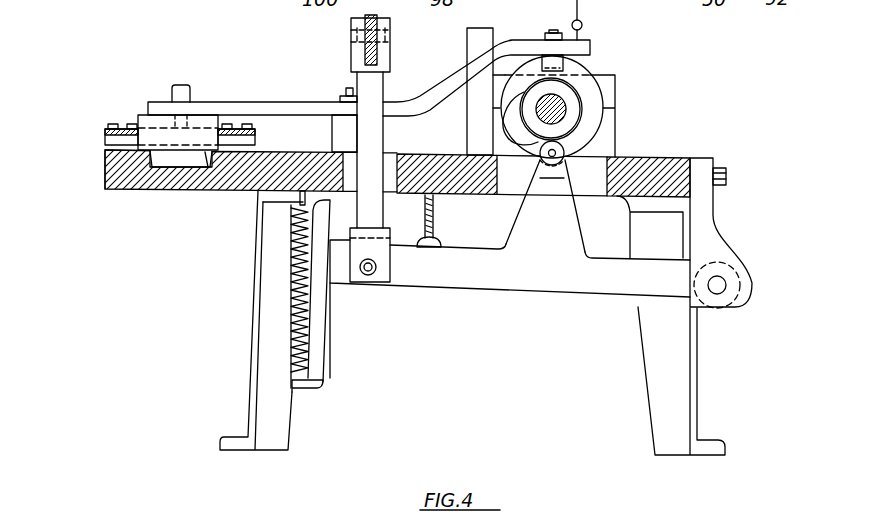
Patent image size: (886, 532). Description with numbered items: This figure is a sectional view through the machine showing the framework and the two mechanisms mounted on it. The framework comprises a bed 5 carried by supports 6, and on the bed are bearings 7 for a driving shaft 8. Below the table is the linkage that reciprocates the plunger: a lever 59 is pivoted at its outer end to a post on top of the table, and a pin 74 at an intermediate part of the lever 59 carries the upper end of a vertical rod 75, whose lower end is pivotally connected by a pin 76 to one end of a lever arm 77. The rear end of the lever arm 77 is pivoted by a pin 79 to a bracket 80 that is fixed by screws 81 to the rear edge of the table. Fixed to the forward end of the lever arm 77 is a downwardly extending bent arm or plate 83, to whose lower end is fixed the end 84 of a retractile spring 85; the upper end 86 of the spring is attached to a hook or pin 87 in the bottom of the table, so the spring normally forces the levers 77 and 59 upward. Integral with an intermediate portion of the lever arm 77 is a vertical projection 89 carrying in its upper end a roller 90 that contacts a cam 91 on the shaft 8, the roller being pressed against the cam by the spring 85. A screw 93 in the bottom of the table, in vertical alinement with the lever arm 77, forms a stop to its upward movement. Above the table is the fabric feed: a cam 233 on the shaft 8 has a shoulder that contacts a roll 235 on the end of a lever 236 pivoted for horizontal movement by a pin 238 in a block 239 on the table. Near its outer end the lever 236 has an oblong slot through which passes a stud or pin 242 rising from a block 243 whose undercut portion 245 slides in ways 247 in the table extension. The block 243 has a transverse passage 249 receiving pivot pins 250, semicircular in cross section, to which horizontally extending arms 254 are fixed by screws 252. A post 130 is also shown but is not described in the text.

The bed 5 is at (672, 165).
The supports 6 is at (270, 343).
The bearings 7 is at (607, 83).
The driving shaft 8 is at (563, 108).
The lever 59 is at (376, 52).
The pin 74 is at (385, 35).
The vertical rod 75 is at (373, 138).
The pin 76 is at (370, 268).
The lever arm 77 is at (462, 282).
The pin 79 is at (720, 288).
The bracket 80 is at (712, 238).
The screws 81 is at (726, 177).
The bent arm or plate 83 is at (327, 345).
The end of retractile spring 84 is at (290, 381).
The retractile spring 85 is at (292, 276).
The upper end of spring 86 is at (300, 205).
The hook or pin 87 is at (305, 200).
The vertical projection 89 is at (568, 229).
The roller 90 is at (562, 150).
The cam 91 is at (552, 175).
The screw 93 is at (433, 221).
The post 130 is at (480, 77).
The cam 233 is at (578, 73).
The roll 235 is at (593, 35).
The lever 236 is at (507, 47).
The pin 238 is at (347, 90).
The block 239 is at (338, 133).
The stud or pin 242 is at (181, 92).
The block 243 is at (147, 117).
The undercut portion 245 is at (170, 160).
The ways 247 is at (147, 154).
The transverse passage 249 is at (195, 178).
The pivot pins 250 is at (110, 140).
The screws 252 is at (115, 126).
The arms 254 is at (110, 126).